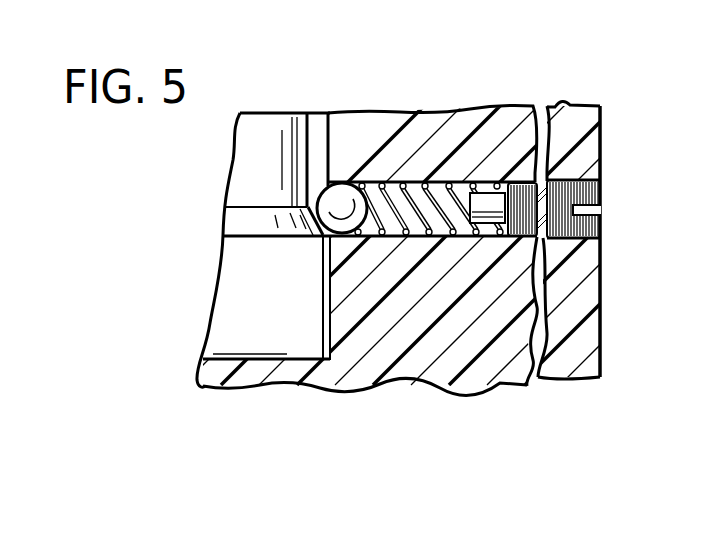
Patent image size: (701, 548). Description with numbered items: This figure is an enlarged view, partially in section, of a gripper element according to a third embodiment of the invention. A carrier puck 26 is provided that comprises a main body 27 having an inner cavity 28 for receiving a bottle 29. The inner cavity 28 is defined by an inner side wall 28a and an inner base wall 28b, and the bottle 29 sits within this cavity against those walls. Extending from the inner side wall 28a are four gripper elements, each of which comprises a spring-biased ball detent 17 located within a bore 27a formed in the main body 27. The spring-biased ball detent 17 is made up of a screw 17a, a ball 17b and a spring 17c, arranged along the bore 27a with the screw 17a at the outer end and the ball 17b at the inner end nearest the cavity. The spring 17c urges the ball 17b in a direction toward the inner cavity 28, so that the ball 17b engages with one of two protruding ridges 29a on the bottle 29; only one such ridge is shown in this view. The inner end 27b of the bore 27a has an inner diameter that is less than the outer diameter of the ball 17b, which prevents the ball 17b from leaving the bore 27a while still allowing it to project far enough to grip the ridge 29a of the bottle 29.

The spring-biased ball detent 17 is at (612, 138).
The screw 17a is at (590, 196).
The ball 17b is at (344, 196).
The spring 17c is at (428, 190).
The carrier puck 26 is at (578, 125).
The main body 27 is at (587, 291).
The bore 27a is at (457, 186).
The inner end of the bore 27b is at (332, 172).
The inner cavity 28 is at (334, 186).
The inner side wall 28a is at (331, 344).
The inner base wall 28b is at (326, 355).
The bottle 29 is at (265, 138).
The protruding ridge 29a is at (262, 225).